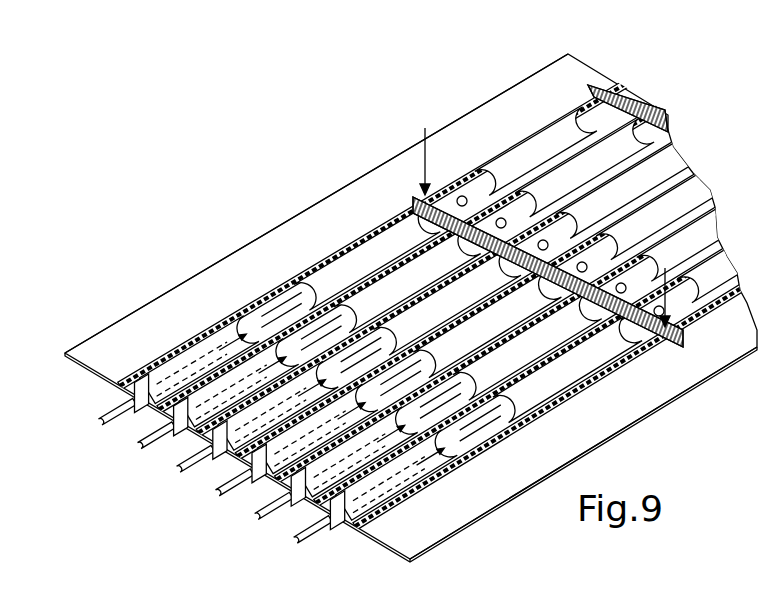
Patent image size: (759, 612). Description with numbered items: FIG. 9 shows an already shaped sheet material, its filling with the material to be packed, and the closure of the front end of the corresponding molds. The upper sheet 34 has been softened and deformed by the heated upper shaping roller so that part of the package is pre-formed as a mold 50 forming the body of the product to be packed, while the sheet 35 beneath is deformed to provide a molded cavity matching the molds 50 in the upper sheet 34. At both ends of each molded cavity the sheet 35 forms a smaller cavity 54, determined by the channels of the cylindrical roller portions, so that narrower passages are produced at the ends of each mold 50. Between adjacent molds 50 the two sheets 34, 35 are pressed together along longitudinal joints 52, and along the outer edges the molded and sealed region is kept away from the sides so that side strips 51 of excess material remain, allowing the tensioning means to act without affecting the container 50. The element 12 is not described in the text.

The mold 50 is at (389, 310).
The side strip 51 is at (315, 222).
The longitudinal joint 52 is at (372, 230).
The smaller cavity 54 is at (273, 320).
The upper sheet 34 is at (131, 333).
The sheet 35 is at (83, 382).
The pin 12 is at (233, 500).